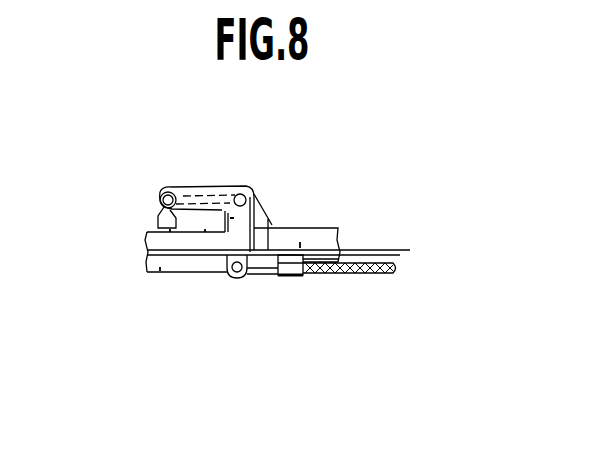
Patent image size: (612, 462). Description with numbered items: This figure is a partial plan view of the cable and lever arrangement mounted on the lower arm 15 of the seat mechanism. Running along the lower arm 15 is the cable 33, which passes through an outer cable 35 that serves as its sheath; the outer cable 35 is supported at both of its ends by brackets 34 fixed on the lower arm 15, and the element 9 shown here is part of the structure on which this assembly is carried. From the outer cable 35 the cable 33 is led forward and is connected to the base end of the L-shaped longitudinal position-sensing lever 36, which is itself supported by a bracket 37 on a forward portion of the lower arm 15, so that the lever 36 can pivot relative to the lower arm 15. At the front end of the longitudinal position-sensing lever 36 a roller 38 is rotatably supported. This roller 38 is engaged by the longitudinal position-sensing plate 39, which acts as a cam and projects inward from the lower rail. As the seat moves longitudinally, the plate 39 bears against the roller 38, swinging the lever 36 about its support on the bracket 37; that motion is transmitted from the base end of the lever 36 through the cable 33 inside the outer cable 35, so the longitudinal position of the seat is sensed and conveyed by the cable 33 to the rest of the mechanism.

The base block 9 is at (318, 238).
The lower arm 15 is at (336, 274).
The cable 33 is at (258, 277).
The brackets 34 is at (287, 276).
The outer cable 35 is at (322, 274).
The longitudinal position-sensing lever 36 is at (254, 186).
The bracket 37 is at (266, 226).
The roller 38 is at (177, 186).
The longitudinal position-sensing plate 39 is at (147, 228).